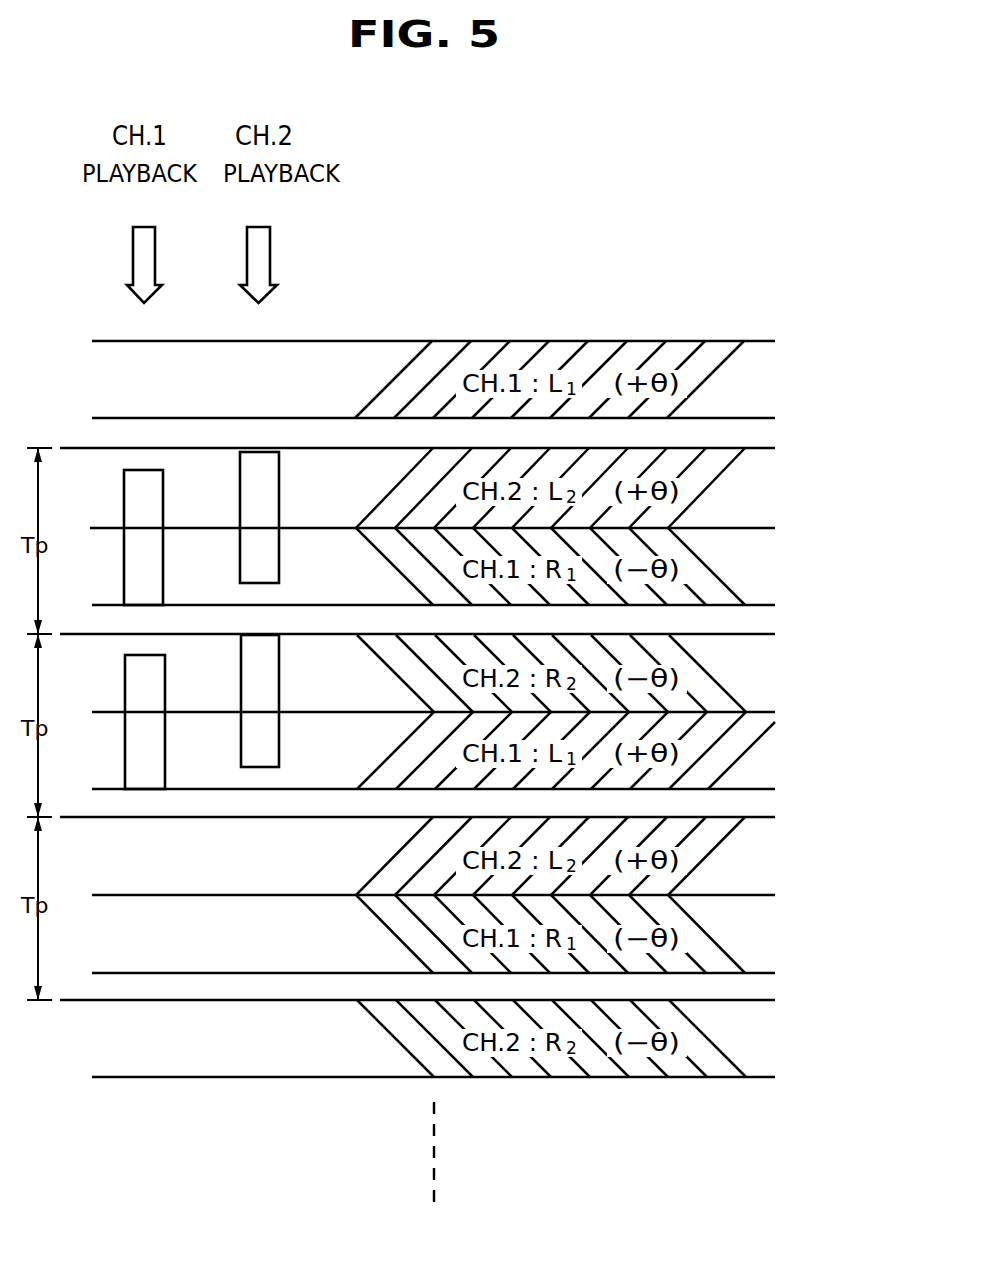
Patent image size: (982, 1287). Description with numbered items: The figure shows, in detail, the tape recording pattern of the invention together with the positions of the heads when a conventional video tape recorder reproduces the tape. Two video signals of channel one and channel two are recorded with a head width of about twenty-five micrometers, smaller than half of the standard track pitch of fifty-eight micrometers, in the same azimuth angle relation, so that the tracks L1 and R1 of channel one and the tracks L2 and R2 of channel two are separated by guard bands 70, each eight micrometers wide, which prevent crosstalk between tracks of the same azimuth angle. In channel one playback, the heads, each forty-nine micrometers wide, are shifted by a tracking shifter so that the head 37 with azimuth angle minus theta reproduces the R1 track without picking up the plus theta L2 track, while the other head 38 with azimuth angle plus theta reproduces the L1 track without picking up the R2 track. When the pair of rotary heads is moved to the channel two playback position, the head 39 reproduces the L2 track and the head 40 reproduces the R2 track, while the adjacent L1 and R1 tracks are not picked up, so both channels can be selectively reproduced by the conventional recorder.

The head 37 is at (124, 576).
The head 38 is at (125, 759).
The head 39 is at (240, 470).
The head 40 is at (241, 751).
The guard band 70 is at (762, 436).